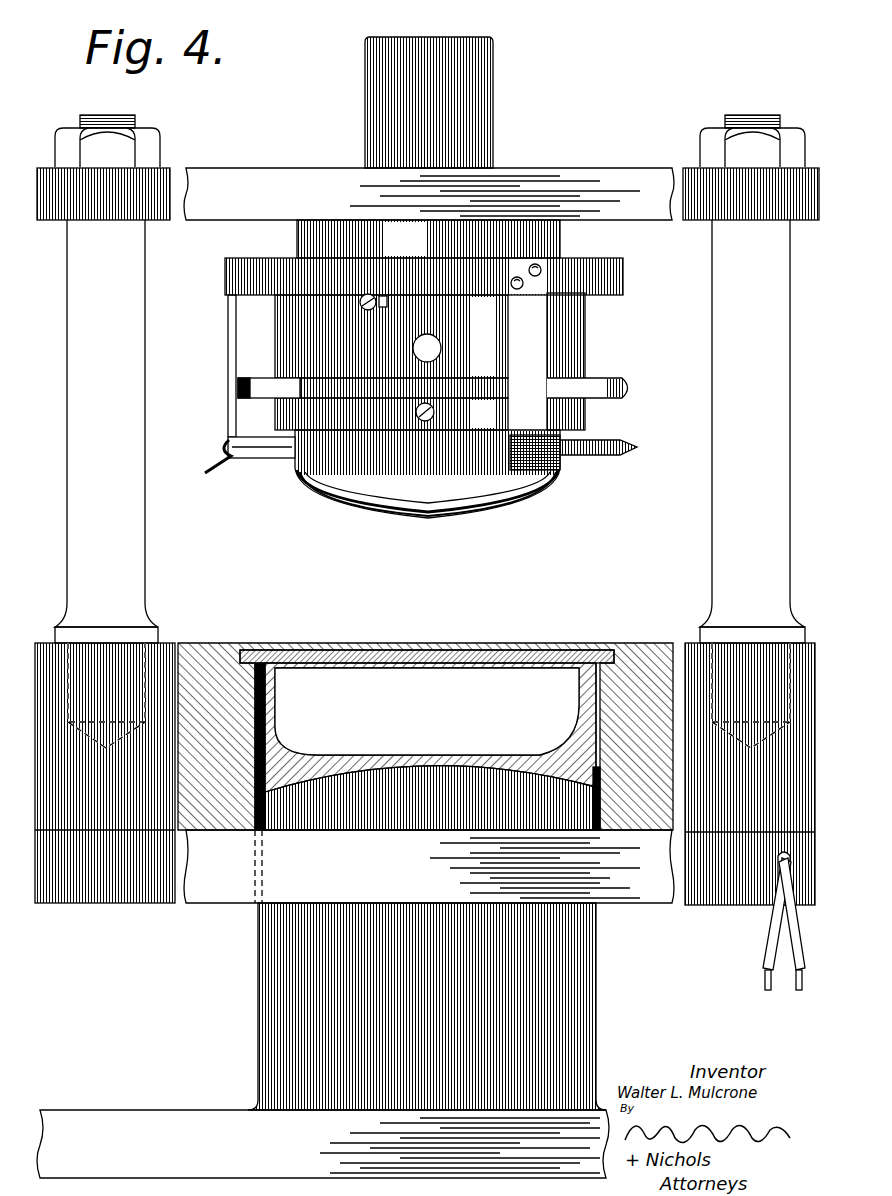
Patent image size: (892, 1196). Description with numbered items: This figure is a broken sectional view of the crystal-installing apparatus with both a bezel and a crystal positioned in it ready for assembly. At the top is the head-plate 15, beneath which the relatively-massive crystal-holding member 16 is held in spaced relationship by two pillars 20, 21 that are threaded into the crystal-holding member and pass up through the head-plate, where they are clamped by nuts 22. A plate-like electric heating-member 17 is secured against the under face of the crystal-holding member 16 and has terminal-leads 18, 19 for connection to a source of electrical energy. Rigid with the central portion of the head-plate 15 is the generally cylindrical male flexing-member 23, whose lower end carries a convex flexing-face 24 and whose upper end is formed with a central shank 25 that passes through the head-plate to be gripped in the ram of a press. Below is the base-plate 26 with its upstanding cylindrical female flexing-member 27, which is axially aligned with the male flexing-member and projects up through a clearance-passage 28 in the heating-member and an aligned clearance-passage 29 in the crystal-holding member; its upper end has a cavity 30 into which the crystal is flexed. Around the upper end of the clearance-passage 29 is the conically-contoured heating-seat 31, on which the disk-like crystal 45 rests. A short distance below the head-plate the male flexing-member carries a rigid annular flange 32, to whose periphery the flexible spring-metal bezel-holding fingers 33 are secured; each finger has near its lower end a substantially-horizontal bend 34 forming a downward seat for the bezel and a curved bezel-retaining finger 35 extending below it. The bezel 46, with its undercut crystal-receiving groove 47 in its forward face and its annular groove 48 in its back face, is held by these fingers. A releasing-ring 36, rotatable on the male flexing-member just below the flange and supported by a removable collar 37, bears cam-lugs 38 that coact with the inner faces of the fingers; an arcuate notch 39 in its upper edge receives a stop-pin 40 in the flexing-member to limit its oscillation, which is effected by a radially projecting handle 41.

The head-plate 15 is at (634, 170).
The crystal-holding member 16 is at (648, 648).
The electric heating-member 17 is at (650, 907).
The terminal-lead 18 is at (762, 985).
The terminal-lead 19 is at (808, 989).
The pillar 20 is at (67, 491).
The pillar 21 is at (790, 492).
The nut 22 is at (140, 132).
The male flexing-member 23 is at (562, 236).
The convex flexing-face 24 is at (455, 519).
The shank 25 is at (495, 113).
The base-plate 26 is at (132, 1111).
The female flexing-member 27 is at (258, 1008).
The clearance-passage 28 is at (254, 870).
The clearance-passage 29 is at (266, 806).
The cavity 30 is at (453, 714).
The heating-seat 31 is at (260, 650).
The annular flange 32 is at (625, 281).
The bezel-holding finger 33 is at (228, 346).
The bend 34 is at (226, 432).
The bezel-retaining finger 35 is at (208, 463).
The releasing-ring 36 is at (280, 336).
The collar 37 is at (390, 430).
The cam-lug 38 is at (258, 383).
The arcuate notch 39 is at (385, 309).
The stop-pin 40 is at (368, 312).
The handle 41 is at (413, 353).
The crystal 45 is at (474, 650).
The bezel 46 is at (630, 453).
The crystal-receiving groove 47 is at (605, 458).
The annular groove 48 is at (608, 441).